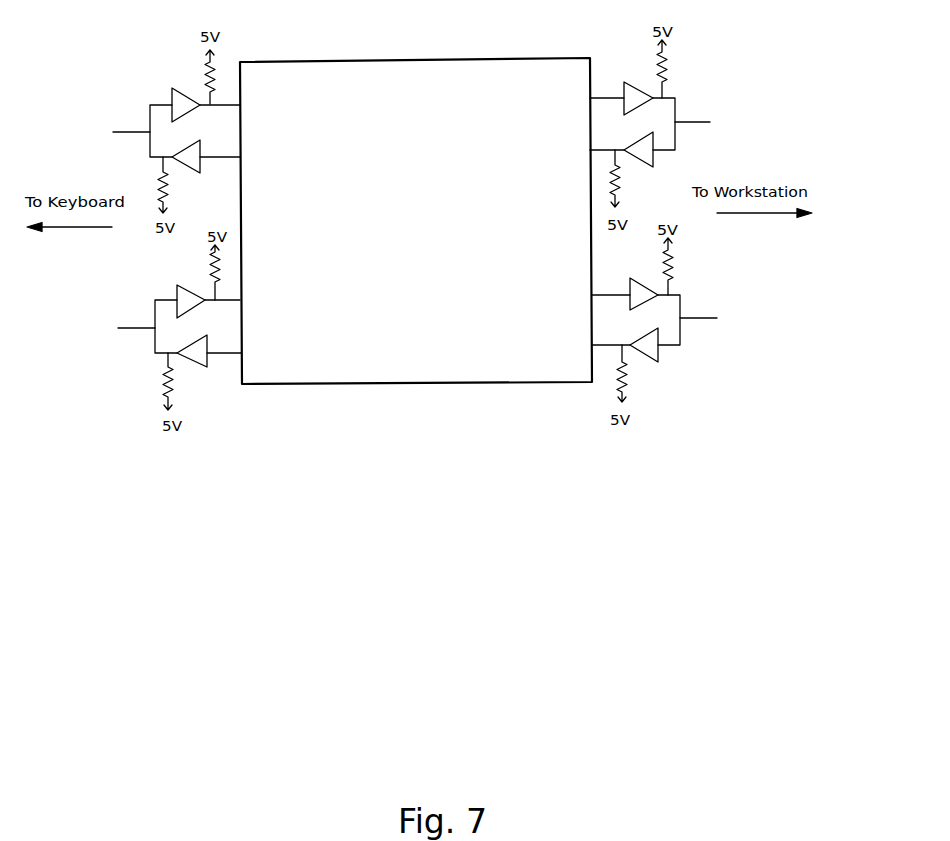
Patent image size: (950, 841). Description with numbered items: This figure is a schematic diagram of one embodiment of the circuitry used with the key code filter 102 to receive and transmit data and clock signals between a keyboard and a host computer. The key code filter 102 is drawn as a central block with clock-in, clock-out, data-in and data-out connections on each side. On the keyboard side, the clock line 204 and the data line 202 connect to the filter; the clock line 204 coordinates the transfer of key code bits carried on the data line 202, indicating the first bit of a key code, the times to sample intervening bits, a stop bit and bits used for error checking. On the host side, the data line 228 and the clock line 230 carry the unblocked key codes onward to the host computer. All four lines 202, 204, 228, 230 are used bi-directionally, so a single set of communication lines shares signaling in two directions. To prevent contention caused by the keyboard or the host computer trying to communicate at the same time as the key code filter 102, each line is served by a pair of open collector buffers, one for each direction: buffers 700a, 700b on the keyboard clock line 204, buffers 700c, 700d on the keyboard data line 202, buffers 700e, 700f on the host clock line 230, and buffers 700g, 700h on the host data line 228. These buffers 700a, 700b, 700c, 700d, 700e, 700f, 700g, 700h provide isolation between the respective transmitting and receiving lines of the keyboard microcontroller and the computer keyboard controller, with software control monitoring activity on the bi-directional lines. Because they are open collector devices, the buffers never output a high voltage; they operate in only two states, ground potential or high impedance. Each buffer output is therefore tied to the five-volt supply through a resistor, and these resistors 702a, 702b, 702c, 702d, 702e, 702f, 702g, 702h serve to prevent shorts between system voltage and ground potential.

The key code filter 102 is at (478, 84).
The data line 202 is at (140, 327).
The clock line 204 is at (138, 130).
The data line 228 is at (707, 317).
The clock line 230 is at (703, 122).
The open collector buffer 700a is at (185, 92).
The open collector buffer 700b is at (190, 160).
The open collector buffer 700c is at (190, 298).
The open collector buffer 700d is at (195, 355).
The open collector buffer 700e is at (637, 92).
The open collector buffer 700f is at (645, 152).
The open collector buffer 700g is at (643, 290).
The open collector buffer 700h is at (648, 350).
The resistor 702a is at (213, 81).
The resistor 702b is at (160, 177).
The resistor 702c is at (215, 278).
The resistor 702d is at (162, 383).
The resistor 702e is at (667, 53).
The resistor 702f is at (613, 185).
The resistor 702g is at (672, 242).
The resistor 702h is at (617, 393).